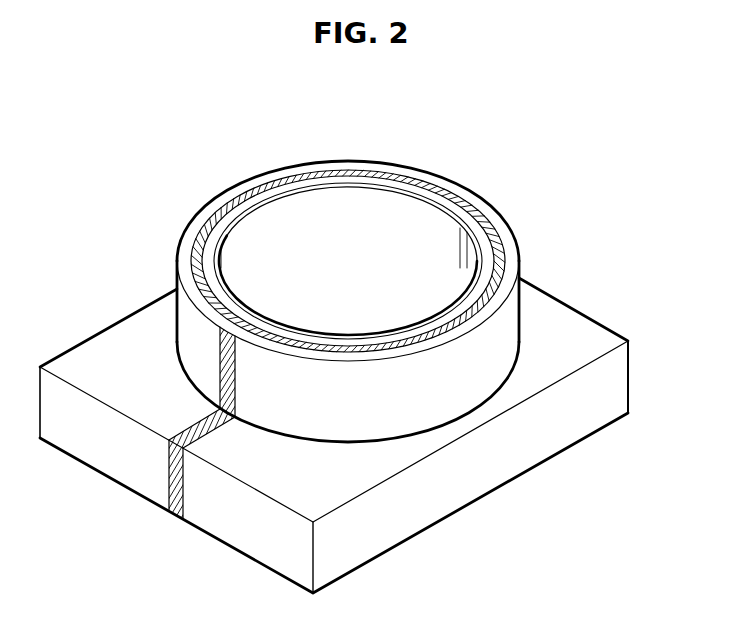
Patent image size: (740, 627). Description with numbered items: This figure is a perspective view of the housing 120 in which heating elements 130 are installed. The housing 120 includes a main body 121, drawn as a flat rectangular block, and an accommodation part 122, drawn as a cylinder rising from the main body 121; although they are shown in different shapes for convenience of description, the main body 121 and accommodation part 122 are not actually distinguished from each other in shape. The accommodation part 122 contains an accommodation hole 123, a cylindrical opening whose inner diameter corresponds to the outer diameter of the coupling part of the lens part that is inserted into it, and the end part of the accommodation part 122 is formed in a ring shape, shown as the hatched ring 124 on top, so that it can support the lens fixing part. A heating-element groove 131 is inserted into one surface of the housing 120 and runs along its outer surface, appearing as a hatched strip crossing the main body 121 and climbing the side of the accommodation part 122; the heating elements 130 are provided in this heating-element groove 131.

The housing 120 is at (407, 274).
The main body 121 is at (610, 393).
The accommodation part 122 is at (510, 318).
The accommodation hole 123 is at (348, 237).
The sealing ring 124 is at (467, 193).
The heating elements 130 is at (188, 433).
The heating-element groove 131 is at (177, 488).